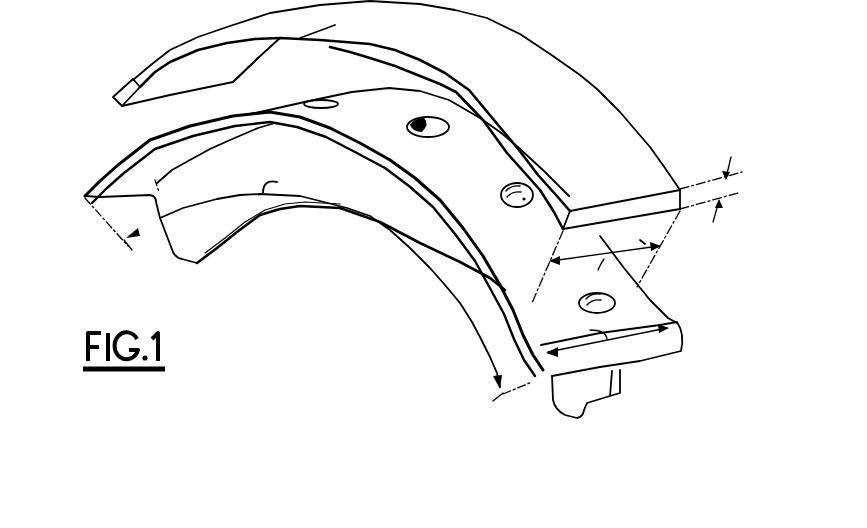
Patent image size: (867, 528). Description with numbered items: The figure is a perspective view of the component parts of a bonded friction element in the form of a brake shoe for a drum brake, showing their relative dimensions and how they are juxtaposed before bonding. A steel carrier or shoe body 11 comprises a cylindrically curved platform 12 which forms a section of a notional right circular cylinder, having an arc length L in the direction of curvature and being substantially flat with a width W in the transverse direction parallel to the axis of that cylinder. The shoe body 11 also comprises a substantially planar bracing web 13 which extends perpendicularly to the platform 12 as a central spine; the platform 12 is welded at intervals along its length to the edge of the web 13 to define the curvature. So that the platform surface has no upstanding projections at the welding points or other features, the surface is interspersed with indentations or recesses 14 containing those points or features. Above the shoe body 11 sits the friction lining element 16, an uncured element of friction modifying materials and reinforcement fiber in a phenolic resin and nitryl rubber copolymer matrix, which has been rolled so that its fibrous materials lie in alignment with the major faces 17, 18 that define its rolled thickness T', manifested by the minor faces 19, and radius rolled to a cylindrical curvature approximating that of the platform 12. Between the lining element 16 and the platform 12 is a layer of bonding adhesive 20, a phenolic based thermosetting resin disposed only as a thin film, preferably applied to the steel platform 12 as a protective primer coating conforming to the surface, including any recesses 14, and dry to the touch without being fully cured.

The shoe body 11 is at (224, 251).
The cylindrically curved platform 12 is at (660, 362).
The bracing web 13 is at (570, 401).
The recesses 14 is at (427, 118).
The friction lining element 16 is at (414, 151).
The major face 17 is at (133, 79).
The major face 18 is at (318, 15).
The minor faces 19 is at (167, 58).
The layer of bonding adhesive 20 is at (527, 283).